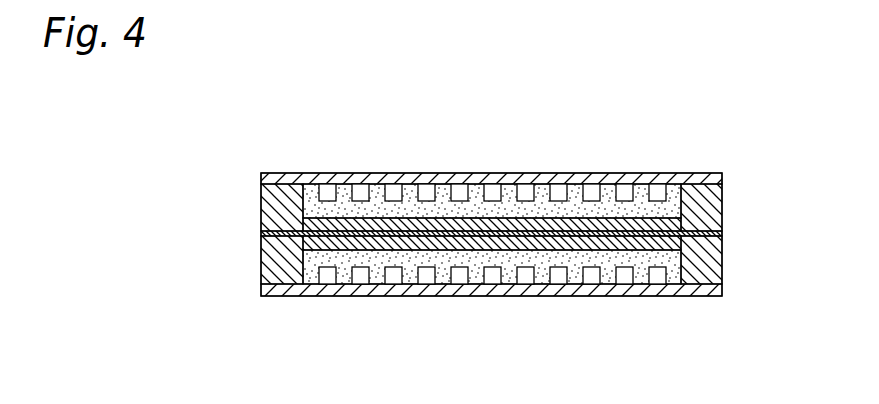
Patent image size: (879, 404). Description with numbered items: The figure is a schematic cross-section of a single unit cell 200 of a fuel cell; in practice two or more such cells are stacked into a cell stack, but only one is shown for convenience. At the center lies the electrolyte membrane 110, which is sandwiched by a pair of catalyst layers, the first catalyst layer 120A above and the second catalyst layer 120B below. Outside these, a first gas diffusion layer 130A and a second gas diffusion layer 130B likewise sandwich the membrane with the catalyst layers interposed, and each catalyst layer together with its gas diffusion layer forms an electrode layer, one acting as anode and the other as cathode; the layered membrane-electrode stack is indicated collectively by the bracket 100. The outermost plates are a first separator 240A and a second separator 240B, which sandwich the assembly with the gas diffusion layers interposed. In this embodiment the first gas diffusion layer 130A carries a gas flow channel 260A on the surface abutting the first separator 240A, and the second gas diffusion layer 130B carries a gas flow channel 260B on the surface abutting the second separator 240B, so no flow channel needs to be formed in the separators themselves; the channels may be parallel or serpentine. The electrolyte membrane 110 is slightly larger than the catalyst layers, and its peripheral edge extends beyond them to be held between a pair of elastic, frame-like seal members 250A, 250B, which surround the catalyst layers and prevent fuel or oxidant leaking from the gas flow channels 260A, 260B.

The laminate / magnetic sheet stack 100 is at (179, 157).
The electrolyte membrane 110 is at (260, 233).
The first catalyst layer 120A is at (303, 223).
The second catalyst layer 120B is at (303, 245).
The first gas diffusion layer 130A is at (303, 203).
The second gas diffusion layer 130B is at (305, 263).
The unit cell 200 is at (498, 121).
The first separator 240A is at (683, 173).
The second separator 240B is at (673, 297).
The seal member 250A is at (704, 209).
The seal member 250B is at (698, 265).
The gas flow channel 260A is at (326, 196).
The gas flow channel 260B is at (330, 276).